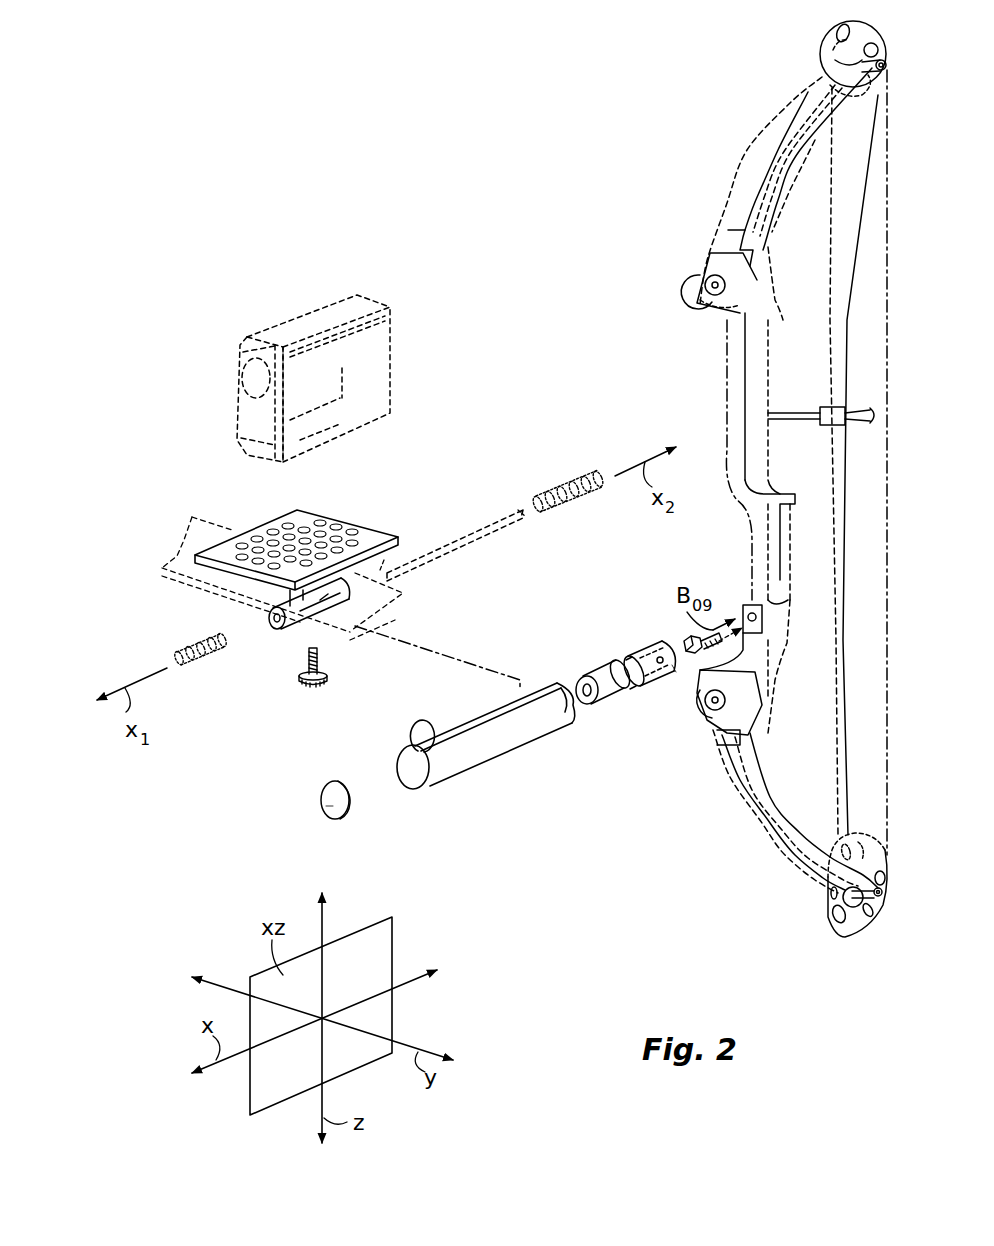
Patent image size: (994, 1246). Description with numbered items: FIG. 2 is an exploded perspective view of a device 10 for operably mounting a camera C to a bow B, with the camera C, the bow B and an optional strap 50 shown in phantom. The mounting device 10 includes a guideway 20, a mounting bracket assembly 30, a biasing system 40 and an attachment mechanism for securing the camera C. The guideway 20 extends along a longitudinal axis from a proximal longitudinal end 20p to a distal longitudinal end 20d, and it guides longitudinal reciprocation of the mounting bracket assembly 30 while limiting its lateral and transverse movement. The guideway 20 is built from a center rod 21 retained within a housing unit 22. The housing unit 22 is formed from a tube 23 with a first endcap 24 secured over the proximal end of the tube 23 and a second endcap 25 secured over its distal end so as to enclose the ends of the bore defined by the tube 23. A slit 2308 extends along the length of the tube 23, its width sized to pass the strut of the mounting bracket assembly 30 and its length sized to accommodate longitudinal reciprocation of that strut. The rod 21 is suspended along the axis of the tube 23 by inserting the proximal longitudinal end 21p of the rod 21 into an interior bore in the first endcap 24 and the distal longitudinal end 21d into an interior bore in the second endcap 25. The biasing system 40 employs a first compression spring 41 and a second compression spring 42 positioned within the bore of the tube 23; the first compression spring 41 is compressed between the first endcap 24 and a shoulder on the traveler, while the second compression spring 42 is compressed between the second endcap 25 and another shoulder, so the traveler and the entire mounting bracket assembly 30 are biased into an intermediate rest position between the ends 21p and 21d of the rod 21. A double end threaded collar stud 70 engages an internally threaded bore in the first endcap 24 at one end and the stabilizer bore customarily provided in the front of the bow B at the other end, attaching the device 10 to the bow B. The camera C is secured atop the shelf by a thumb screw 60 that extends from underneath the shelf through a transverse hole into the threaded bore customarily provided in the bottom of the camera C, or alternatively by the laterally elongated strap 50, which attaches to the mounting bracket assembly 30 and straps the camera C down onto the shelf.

The mounting device 10 is at (163, 443).
The guideway 20 is at (312, 747).
The distal longitudinal end of the guideway 20d is at (333, 806).
The proximal longitudinal end of the guideway 20p is at (673, 668).
The center rod 21 is at (473, 545).
The distal longitudinal end of the rod 21d is at (386, 560).
The proximal longitudinal end of the rod 21p is at (520, 510).
The housing unit 22 is at (595, 820).
The tube 23 is at (505, 748).
The slit 2308 is at (400, 774).
The first endcap 24 is at (617, 649).
The second endcap 25 is at (322, 799).
The mounting bracket assembly 30 is at (148, 538).
The biasing system 40 is at (160, 655).
The first compression spring 41 is at (589, 474).
The second compression spring 42 is at (200, 656).
The strap 50 is at (178, 515).
The thumb screw 60 is at (327, 679).
The double end threaded collar stud 70 is at (686, 640).
The bow B is at (752, 146).
The camera C is at (307, 330).